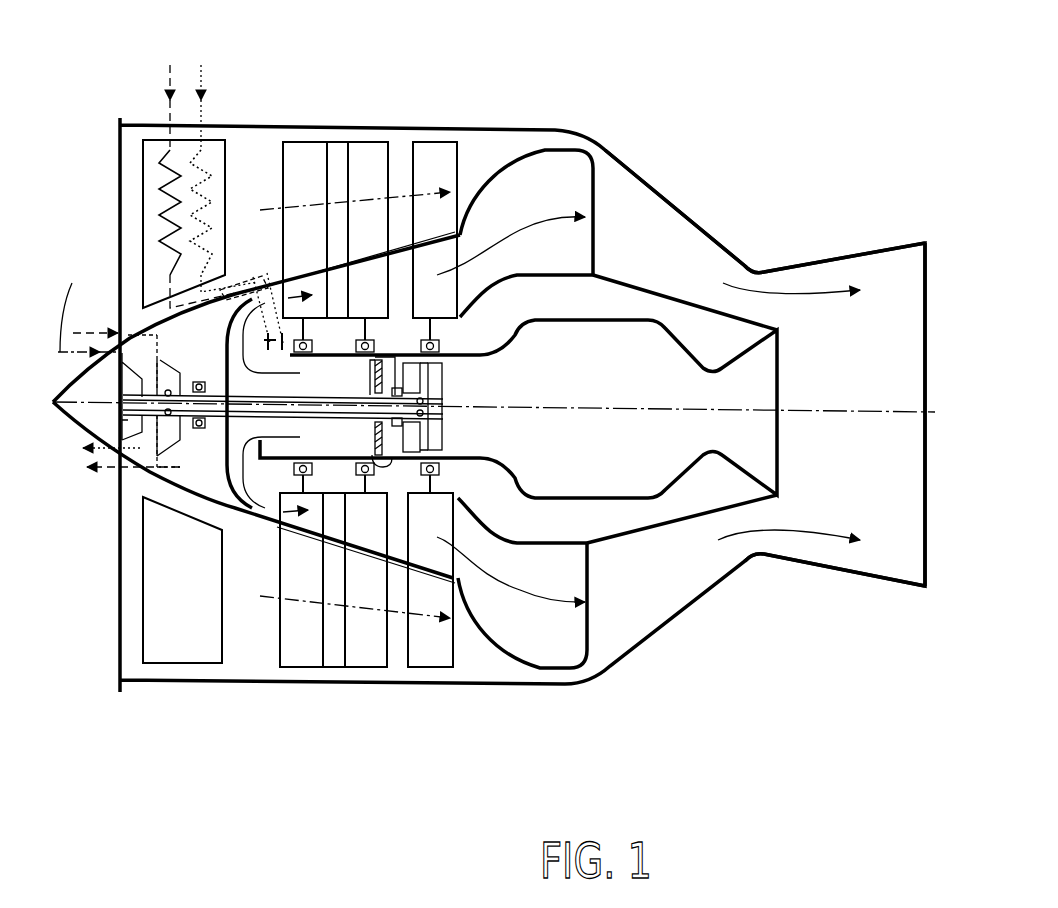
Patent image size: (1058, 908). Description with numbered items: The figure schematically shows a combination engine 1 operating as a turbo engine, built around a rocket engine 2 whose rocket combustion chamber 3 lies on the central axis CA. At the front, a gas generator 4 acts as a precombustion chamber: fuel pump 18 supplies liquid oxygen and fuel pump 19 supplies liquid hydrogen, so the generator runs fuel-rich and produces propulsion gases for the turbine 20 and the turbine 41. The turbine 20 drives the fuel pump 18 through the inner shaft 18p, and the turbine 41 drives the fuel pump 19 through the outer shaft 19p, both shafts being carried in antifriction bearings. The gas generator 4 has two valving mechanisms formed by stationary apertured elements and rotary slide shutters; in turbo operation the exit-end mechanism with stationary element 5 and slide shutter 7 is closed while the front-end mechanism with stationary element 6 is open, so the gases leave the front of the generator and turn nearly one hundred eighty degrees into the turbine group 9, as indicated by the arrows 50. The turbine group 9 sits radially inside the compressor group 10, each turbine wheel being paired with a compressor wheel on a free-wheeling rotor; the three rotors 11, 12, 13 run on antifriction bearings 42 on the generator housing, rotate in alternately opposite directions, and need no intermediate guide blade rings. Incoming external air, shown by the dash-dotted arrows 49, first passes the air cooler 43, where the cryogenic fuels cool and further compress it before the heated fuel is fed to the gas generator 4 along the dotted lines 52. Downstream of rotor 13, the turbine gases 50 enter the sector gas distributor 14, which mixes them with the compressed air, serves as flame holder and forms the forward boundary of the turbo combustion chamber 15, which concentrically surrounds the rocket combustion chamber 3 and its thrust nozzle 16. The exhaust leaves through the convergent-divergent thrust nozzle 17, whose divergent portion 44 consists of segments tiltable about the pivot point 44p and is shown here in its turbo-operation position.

The combination engine 1 is at (333, 35).
The rocket engine 2 is at (683, 280).
The rocket combustion chamber 3 is at (632, 280).
The gas generator 4 is at (318, 450).
The stationary apertured element 5 is at (372, 455).
The stationary apertured element 6 is at (258, 430).
The rotatable slide shutter 7 is at (372, 372).
The turbine group 9 is at (397, 267).
The compressor group 10 is at (335, 157).
The rotor 11 is at (302, 157).
The rotor 12 is at (367, 160).
The rotor 13 is at (437, 157).
The sector gas distributor 14 is at (545, 165).
The combustion chamber of the turbo engine 15 is at (618, 215).
The thrust nozzle of the rocket engine 16 is at (735, 280).
The convergent-divergent thrust nozzle 17 is at (803, 280).
The fuel pump 18 is at (127, 420).
The fuel pump 19 is at (170, 447).
The inner shaft 18p is at (182, 390).
The outer shaft 19p is at (217, 423).
The turbine 20 is at (438, 440).
The turbine 41 is at (445, 431).
The antifriction bearings 42 is at (365, 475).
The air cooler 43 is at (150, 180).
The divergent nozzle portion 44 is at (866, 255).
The pivot point 44p is at (920, 590).
The external air flow arrows 49 is at (272, 596).
The gas flow arrows 50 is at (495, 580).
The dotted fuel supply lines 52 is at (252, 280).
The central axis CA is at (818, 412).